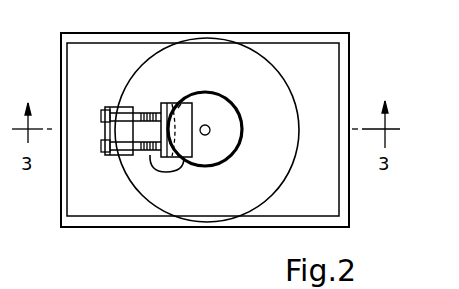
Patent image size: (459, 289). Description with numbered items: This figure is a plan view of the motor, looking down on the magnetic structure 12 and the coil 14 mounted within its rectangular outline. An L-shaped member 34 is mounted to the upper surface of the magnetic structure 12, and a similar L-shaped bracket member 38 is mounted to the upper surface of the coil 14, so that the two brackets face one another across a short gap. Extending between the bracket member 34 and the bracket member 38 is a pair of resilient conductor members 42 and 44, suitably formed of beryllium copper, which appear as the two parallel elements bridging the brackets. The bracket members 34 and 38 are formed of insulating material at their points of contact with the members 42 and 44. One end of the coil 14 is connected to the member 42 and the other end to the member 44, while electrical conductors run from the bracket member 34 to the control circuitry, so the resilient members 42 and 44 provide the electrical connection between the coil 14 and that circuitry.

The magnetic structure 12 is at (200, 41).
The coil 14 is at (243, 124).
The L-shaped member 34 is at (103, 127).
The L-shaped bracket member 38 is at (178, 100).
The resilient conductor member 42 is at (150, 110).
The resilient conductor member 44 is at (158, 150).